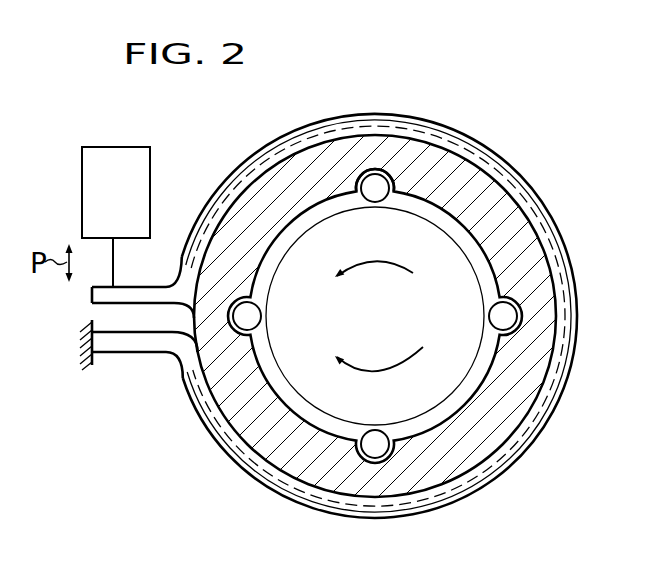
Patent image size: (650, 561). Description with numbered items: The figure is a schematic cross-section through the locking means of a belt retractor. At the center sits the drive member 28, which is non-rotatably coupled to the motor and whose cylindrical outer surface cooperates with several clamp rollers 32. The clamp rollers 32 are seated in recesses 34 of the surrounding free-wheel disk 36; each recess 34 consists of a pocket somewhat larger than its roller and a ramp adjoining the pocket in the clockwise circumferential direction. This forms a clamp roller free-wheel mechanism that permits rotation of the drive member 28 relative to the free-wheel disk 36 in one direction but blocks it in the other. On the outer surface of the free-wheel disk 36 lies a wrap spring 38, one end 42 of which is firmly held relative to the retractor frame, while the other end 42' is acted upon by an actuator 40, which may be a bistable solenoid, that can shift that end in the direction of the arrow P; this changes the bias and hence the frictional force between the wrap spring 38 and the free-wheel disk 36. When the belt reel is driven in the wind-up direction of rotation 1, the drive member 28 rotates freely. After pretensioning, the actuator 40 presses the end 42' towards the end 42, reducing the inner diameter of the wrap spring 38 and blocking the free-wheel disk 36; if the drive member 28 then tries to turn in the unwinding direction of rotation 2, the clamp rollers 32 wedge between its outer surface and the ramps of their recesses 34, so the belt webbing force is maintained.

The direction of rotation 1 is at (395, 261).
The direction of rotation 2 is at (398, 366).
The drive member 28 is at (462, 362).
The clamp rollers 32 is at (379, 186).
The recess 34 is at (366, 177).
The free-wheel disk 36 is at (462, 453).
The wrap spring 38 is at (528, 430).
The actuator 40 is at (116, 164).
The end of the wrap spring 42 is at (139, 359).
The other end of the wrap spring 42' is at (112, 290).